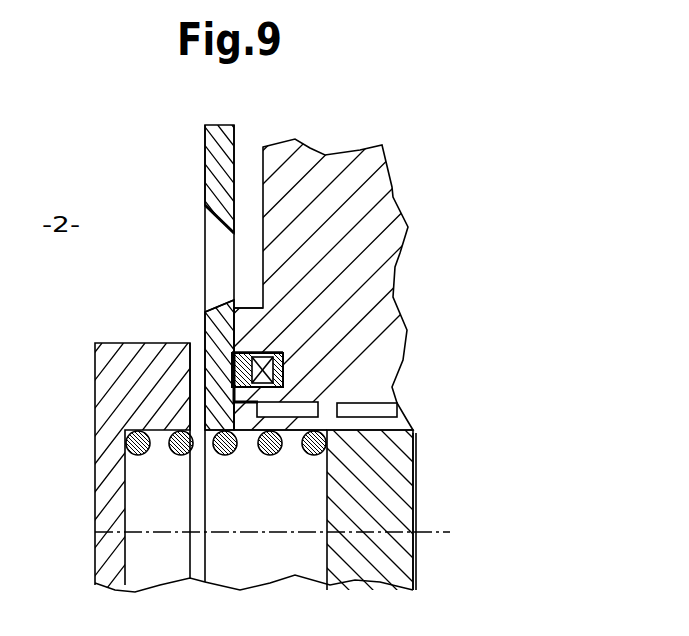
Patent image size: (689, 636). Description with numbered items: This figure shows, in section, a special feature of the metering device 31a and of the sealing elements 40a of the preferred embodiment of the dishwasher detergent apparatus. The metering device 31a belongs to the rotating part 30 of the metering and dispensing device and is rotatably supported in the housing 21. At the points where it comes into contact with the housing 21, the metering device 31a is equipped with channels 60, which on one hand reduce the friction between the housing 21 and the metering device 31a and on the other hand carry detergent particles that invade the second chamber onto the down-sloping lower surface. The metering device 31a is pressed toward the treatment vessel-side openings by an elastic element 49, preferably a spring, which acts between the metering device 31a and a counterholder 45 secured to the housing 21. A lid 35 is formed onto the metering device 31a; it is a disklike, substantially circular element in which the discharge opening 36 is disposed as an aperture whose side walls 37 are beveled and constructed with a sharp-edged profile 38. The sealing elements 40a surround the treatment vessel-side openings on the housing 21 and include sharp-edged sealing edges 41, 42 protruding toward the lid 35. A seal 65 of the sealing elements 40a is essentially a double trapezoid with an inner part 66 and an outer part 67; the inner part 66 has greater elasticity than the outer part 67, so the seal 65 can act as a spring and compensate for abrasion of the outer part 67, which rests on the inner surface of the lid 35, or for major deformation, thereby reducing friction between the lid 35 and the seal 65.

The housing 21 is at (378, 199).
The counterholder 45 is at (127, 370).
The lid 35 is at (215, 145).
The sealing edge 41 is at (233, 320).
The side walls 37 is at (217, 223).
The discharge opening 36 is at (220, 255).
The sharp-edged profile 38 is at (235, 297).
The rotating part 30 is at (388, 465).
The metering device 31a is at (486, 511).
The elastic element 49 is at (153, 453).
The sealing edge 42 is at (246, 453).
The channels 60 is at (396, 413).
The seal 65 is at (265, 350).
The inner part 66 is at (268, 372).
The outer part 67 is at (238, 365).
The sealing element 40a is at (267, 345).